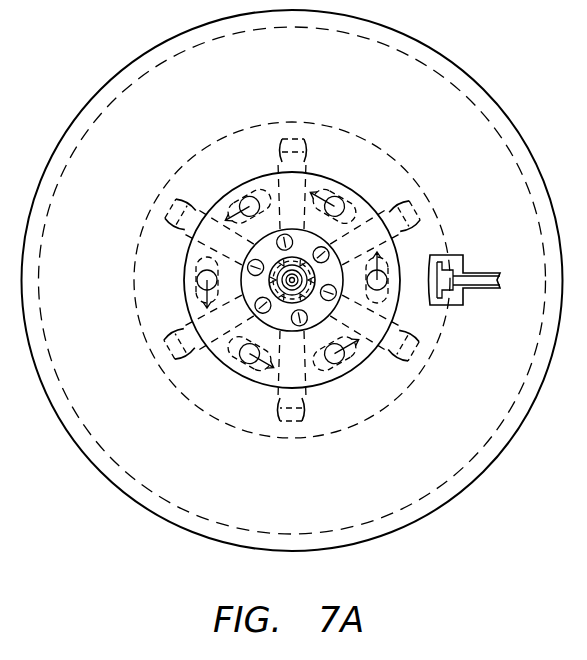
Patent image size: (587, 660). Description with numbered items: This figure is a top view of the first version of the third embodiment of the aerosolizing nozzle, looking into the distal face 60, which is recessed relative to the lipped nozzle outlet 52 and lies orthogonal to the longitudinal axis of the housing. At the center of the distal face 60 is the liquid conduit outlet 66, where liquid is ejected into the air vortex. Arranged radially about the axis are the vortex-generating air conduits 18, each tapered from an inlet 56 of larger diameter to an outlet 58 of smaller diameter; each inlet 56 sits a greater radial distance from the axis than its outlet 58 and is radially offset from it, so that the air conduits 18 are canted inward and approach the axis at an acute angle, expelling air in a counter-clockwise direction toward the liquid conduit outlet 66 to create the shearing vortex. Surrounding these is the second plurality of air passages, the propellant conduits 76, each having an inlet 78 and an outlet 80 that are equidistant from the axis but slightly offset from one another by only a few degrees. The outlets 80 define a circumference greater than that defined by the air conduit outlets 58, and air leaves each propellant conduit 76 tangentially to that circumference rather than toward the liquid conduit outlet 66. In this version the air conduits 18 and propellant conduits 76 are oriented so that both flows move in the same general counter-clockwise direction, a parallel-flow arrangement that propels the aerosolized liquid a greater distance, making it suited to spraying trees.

The vortex-generating air conduits 18 is at (270, 160).
The lipped nozzle outlet 52 is at (308, 293).
The air conduit inlet 56 is at (299, 147).
The air conduit outlet 58 is at (235, 250).
The distal face 60 is at (303, 248).
The liquid conduit outlet 66 is at (291, 292).
The propellant conduits 76 is at (268, 280).
The propellant conduit inlet 78 is at (248, 265).
The propellant conduit outlet 80 is at (207, 285).